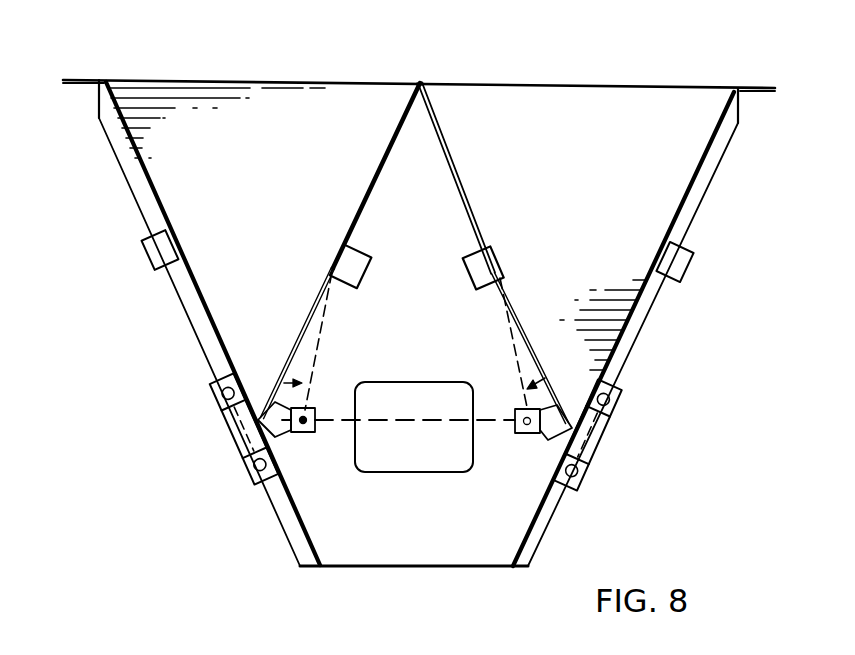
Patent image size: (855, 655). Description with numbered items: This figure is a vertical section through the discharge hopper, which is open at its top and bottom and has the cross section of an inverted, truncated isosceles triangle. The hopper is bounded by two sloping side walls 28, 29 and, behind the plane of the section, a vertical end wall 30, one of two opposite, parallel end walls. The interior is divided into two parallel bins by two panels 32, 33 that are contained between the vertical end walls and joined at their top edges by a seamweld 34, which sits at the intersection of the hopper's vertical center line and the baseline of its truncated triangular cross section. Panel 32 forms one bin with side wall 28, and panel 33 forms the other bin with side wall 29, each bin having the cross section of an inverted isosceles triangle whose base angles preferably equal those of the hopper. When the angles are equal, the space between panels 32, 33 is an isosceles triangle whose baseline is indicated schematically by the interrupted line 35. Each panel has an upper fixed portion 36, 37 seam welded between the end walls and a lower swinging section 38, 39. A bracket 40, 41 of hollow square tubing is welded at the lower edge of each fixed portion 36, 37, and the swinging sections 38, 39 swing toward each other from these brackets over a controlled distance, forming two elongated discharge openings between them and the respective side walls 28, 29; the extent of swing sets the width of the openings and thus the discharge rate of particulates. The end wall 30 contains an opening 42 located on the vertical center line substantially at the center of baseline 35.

The sloping side wall 28 is at (221, 338).
The sloping side wall 29 is at (700, 210).
The vertical end wall 30 is at (648, 106).
The panel 32 is at (301, 331).
The panel 33 is at (522, 308).
The seamweld 34 is at (421, 83).
The baseline 35 is at (501, 432).
The upper fixed portion 36 is at (387, 149).
The upper fixed portion 37 is at (445, 133).
The swinging section 38 is at (274, 384).
The swinging section 39 is at (545, 378).
The bracket 40 is at (366, 274).
The bracket 41 is at (470, 283).
The opening 42 is at (388, 464).